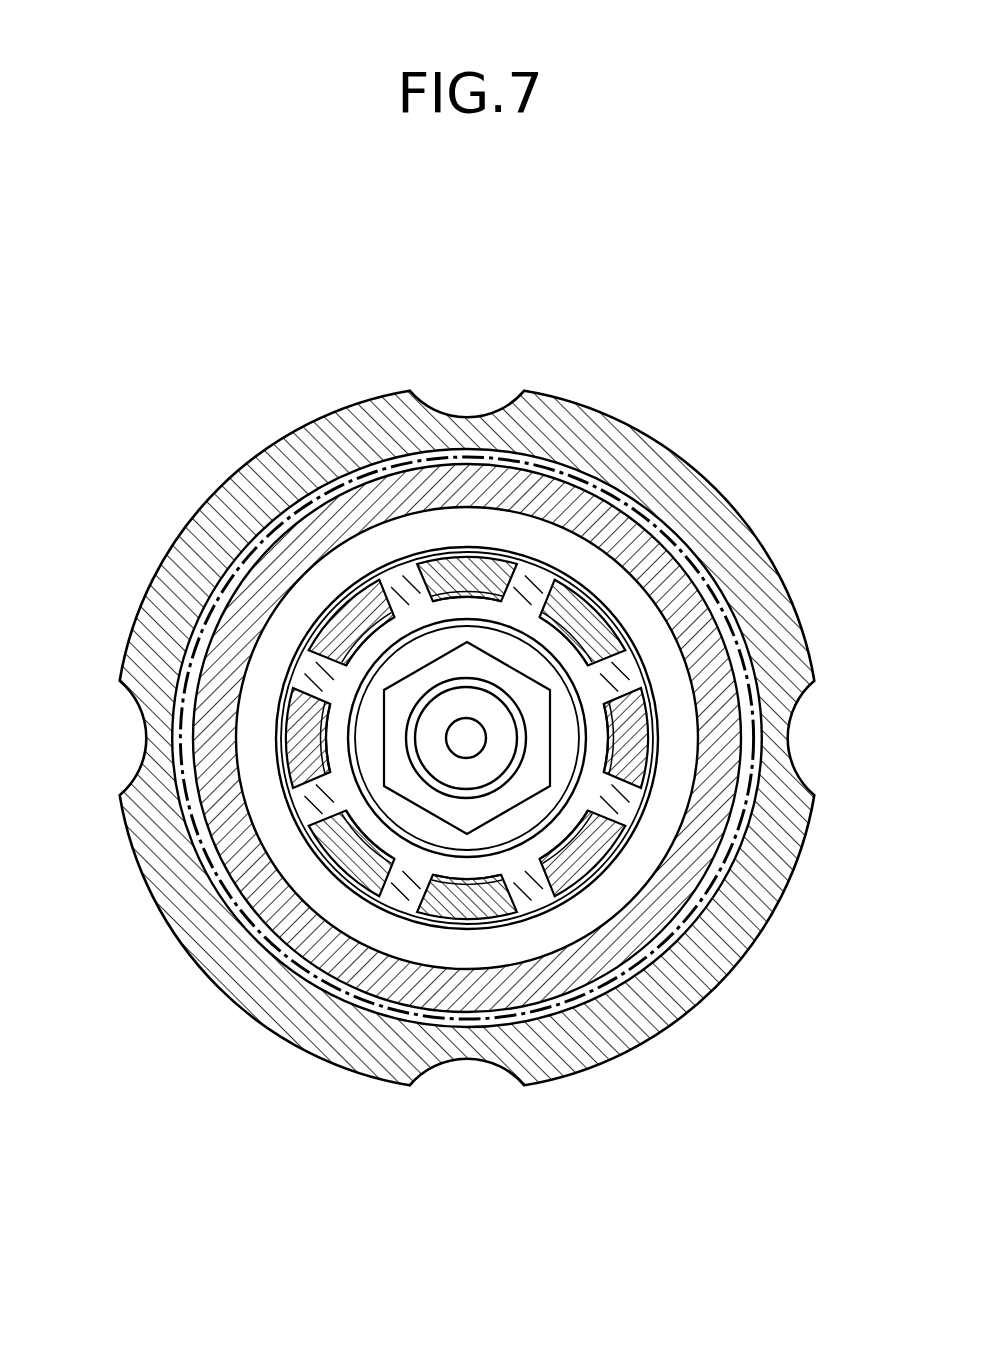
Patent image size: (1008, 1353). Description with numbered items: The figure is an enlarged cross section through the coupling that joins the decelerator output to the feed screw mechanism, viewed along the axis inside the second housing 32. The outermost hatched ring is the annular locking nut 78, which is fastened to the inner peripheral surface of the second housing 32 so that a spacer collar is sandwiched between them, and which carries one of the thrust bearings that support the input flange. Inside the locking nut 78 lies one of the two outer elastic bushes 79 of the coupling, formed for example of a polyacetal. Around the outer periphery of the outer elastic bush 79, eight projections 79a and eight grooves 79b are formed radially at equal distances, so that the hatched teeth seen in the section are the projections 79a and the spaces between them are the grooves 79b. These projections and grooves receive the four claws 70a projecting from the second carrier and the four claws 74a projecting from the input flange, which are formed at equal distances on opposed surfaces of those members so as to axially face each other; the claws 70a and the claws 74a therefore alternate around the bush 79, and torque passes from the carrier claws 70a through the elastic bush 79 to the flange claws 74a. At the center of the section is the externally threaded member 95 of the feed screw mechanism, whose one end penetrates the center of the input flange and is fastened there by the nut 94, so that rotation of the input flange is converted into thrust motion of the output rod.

The second housing 32 is at (645, 422).
The locking nut 78 is at (247, 597).
The outer elastic bush 79 is at (660, 672).
The claw 70a is at (338, 617).
The claw 74a is at (453, 568).
The projection 79a is at (392, 580).
The groove 79b is at (480, 597).
The nut 94 is at (407, 717).
The externally threaded member 95 is at (485, 712).